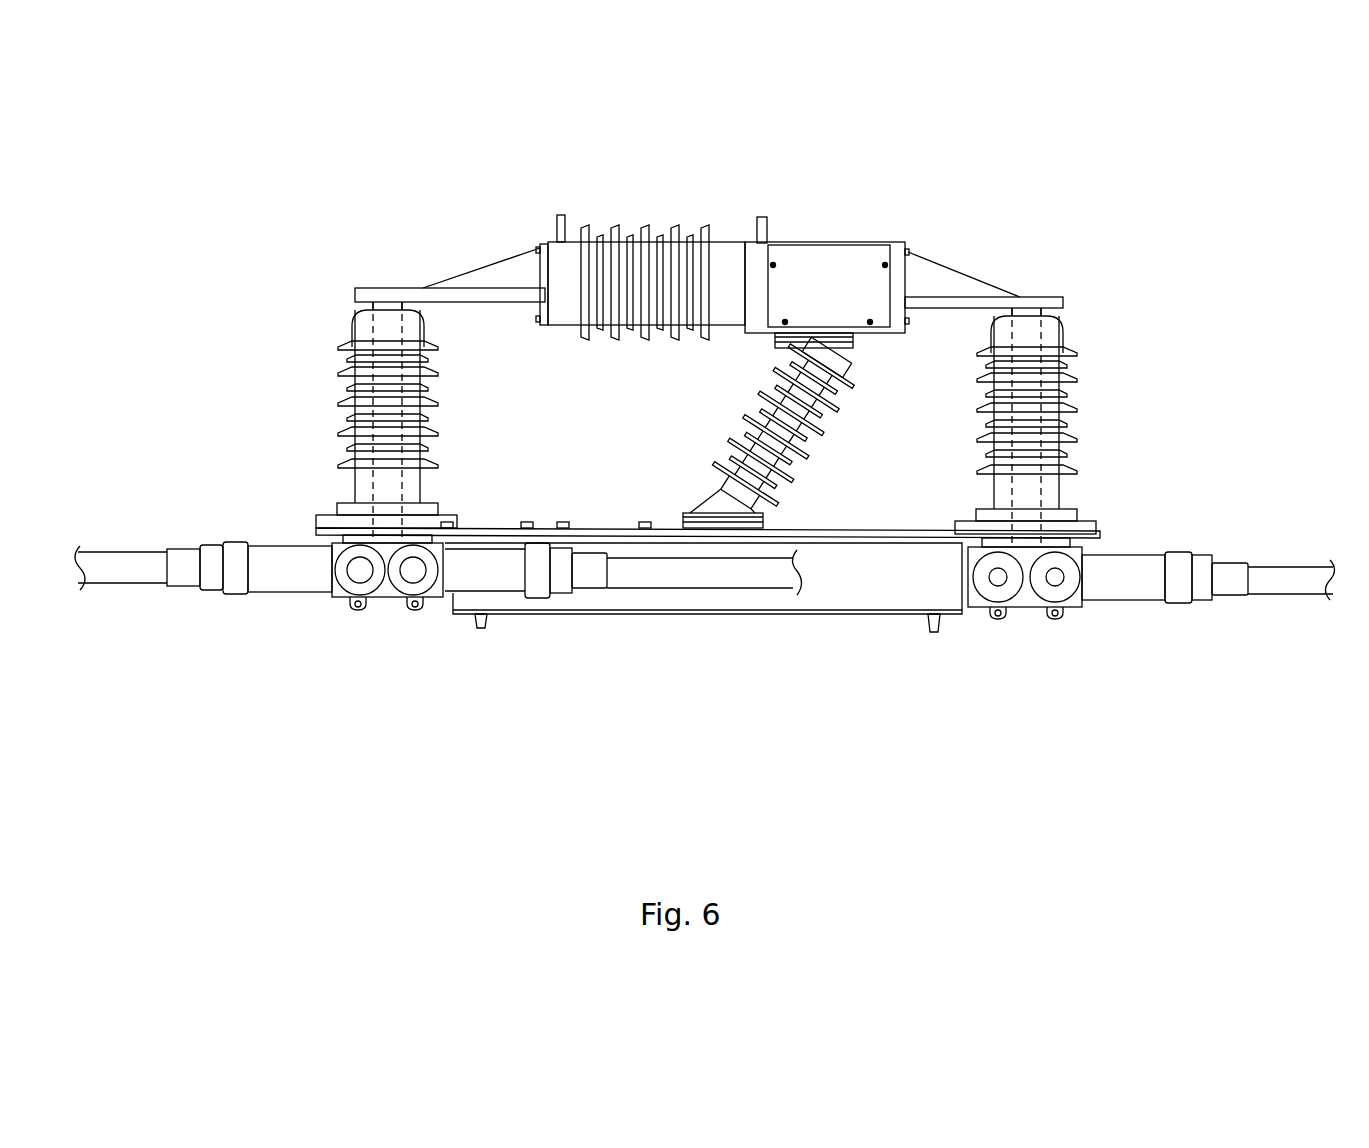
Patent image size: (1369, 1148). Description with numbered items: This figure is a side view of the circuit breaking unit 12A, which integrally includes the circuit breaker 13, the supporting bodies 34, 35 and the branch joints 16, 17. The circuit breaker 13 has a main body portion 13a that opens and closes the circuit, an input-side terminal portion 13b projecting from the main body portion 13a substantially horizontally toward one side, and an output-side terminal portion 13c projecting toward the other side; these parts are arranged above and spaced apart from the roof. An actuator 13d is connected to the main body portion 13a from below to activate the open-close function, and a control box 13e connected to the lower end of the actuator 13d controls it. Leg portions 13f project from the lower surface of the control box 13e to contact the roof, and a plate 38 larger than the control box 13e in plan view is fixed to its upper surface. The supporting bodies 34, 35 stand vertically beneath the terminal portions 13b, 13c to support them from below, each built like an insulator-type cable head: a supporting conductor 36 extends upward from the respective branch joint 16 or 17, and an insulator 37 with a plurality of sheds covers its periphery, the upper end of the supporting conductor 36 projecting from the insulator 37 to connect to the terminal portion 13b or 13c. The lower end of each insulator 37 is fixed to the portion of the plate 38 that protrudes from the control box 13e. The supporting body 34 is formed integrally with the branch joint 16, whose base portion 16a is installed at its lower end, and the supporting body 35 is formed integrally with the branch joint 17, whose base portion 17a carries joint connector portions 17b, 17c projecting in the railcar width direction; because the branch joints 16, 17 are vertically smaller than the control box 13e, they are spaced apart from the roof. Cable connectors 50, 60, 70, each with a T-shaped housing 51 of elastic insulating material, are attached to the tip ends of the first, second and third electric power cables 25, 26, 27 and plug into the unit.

The circuit breaking unit 12A is at (315, 170).
The circuit breaker 13 is at (703, 405).
The main body portion 13a is at (663, 242).
The input-side terminal portion 13b is at (408, 288).
The output-side terminal portion 13c is at (1047, 297).
The actuator 13d is at (745, 401).
The control box 13e is at (829, 593).
The leg portion 13f is at (480, 629).
The branch joint 16 is at (387, 631).
The base portion 16a is at (390, 598).
The branch joint 17 is at (1051, 645).
The base portion 17a is at (1032, 608).
The joint connector portion 17b is at (1065, 593).
The joint connector portion 17c is at (983, 593).
The first electric power cable 25 is at (113, 585).
The second electric power cable 26 is at (692, 588).
The third electric power cable 27 is at (1275, 595).
The supporting body 34 is at (328, 416).
The supporting body 35 is at (1066, 334).
The supporting conductor 36 is at (352, 328).
The insulator 37 is at (347, 403).
The plate 38 is at (598, 528).
The cable connector 50 is at (624, 634).
The housing 51 is at (290, 587).
The cable connector 60 is at (623, 633).
The cable connector 70 is at (1234, 564).